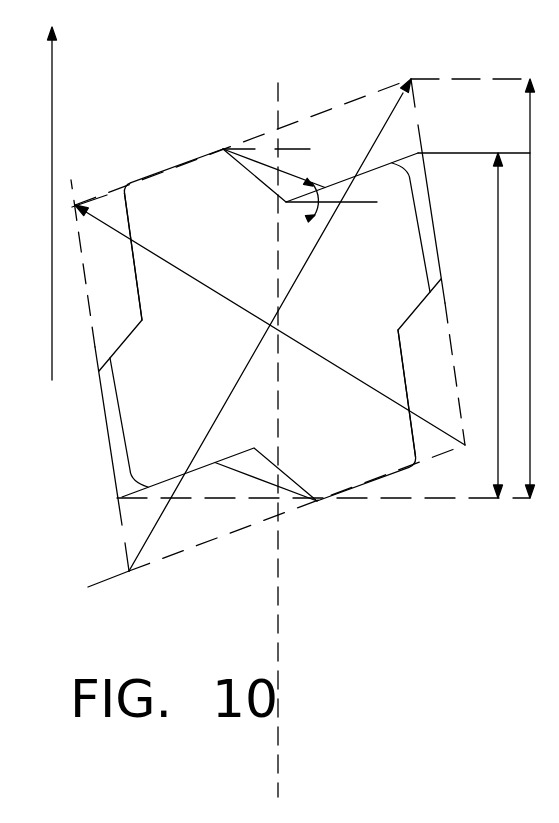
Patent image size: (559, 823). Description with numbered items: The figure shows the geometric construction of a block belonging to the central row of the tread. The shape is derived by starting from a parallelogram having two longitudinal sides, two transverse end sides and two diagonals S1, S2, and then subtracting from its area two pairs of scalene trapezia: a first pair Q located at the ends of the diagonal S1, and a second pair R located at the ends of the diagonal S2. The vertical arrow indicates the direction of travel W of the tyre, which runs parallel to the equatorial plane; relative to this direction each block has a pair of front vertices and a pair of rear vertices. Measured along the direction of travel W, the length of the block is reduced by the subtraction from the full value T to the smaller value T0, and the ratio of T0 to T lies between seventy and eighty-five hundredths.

The direction of travel W is at (69, 203).
The first pair of scalene trapezia Q is at (347, 123).
The second pair of scalene trapezia R is at (107, 302).
The first diagonal S1 is at (270, 325).
The second diagonal S2 is at (270, 325).
The block length T is at (543, 288).
The reduced block length T0 is at (475, 325).